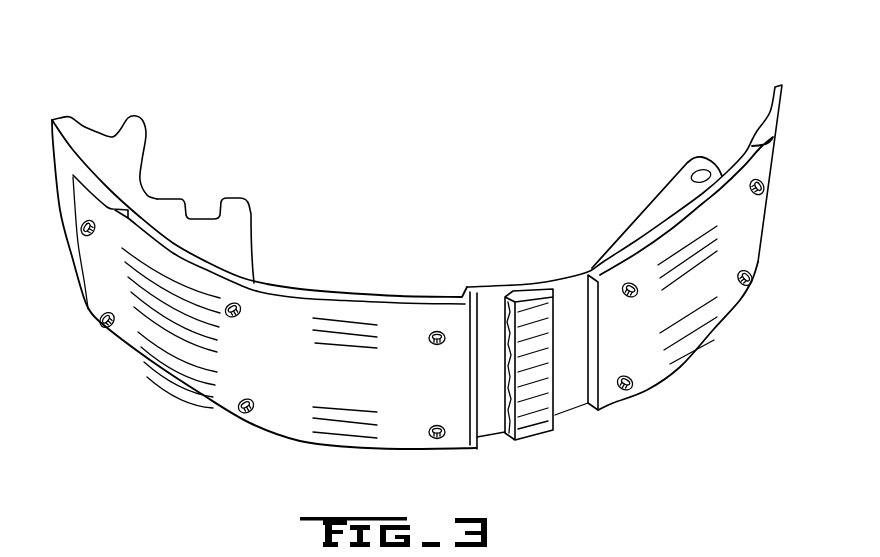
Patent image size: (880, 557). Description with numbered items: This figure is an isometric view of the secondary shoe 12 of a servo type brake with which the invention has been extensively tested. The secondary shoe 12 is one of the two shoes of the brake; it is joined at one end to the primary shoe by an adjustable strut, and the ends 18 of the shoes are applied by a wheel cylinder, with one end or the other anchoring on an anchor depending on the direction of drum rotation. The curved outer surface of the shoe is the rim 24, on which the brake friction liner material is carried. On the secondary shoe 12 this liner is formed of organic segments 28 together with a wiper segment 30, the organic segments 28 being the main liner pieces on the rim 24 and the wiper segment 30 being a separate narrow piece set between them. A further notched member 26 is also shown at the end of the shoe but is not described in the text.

The secondary shoe 12 is at (258, 193).
The ends of the shoes 18 is at (118, 140).
The rims of the shoes 24 is at (337, 297).
The notched bracket 26 is at (153, 200).
The organic segments of the liner 28 is at (267, 332).
The wiper segment 30 is at (540, 425).